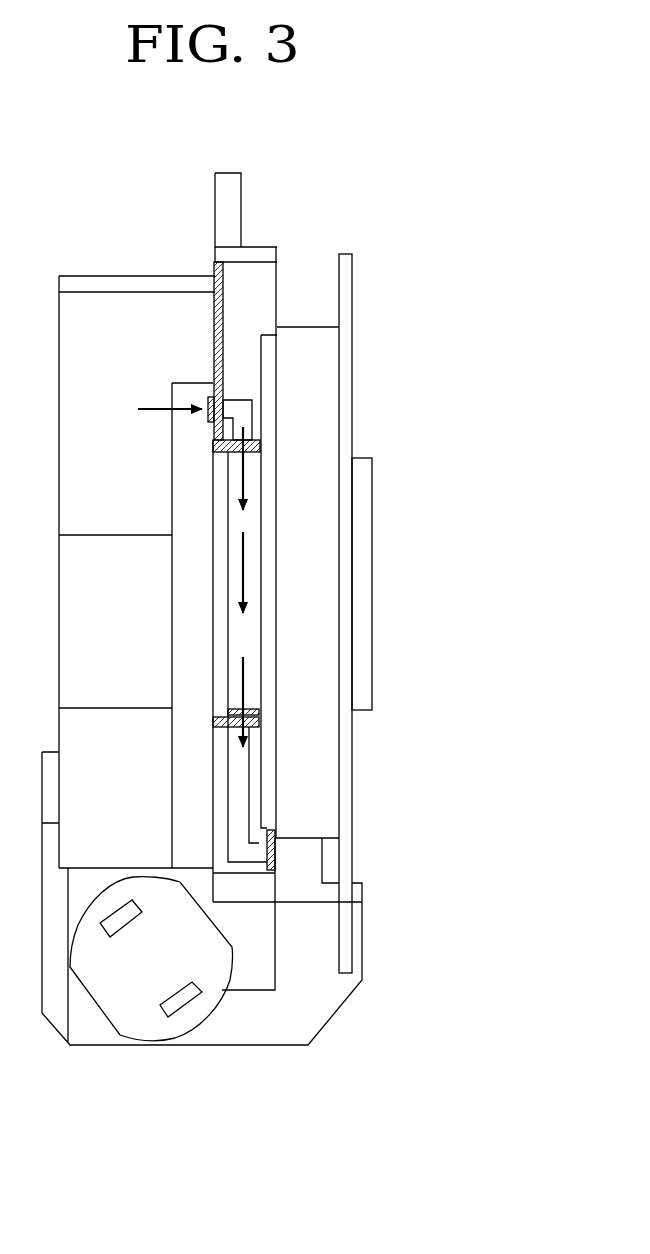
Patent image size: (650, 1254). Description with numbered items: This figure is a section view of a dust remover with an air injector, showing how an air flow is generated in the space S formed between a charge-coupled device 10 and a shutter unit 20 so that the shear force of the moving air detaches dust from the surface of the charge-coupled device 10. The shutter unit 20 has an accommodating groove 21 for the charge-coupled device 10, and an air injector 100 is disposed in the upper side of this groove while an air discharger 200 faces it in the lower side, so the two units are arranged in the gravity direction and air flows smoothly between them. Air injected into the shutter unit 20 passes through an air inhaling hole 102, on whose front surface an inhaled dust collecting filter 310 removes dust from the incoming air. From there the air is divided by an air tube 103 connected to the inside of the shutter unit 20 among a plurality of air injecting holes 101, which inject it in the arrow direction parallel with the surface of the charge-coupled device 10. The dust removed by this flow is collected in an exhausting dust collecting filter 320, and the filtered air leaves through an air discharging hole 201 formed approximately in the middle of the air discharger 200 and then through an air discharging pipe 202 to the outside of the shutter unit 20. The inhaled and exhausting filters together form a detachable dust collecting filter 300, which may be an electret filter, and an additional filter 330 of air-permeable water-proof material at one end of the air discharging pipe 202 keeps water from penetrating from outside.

The shutter unit 20 is at (77, 280).
The accommodating groove 21 is at (254, 287).
The charge-coupled device 10 is at (266, 360).
The air injector 100 is at (357, 409).
The air injecting holes 101 is at (248, 442).
The air inhaling hole 102 is at (215, 403).
The air tube 103 is at (248, 420).
The dust collecting filter 300 is at (323, 642).
The inhaled dust collecting filter 310 is at (198, 413).
The exhausting dust collecting filter 320 is at (247, 707).
The additional filter 330 is at (270, 852).
The space S is at (250, 632).
The air discharger 200 is at (350, 779).
The air discharging hole 201 is at (247, 721).
The air discharging pipe 202 is at (246, 793).